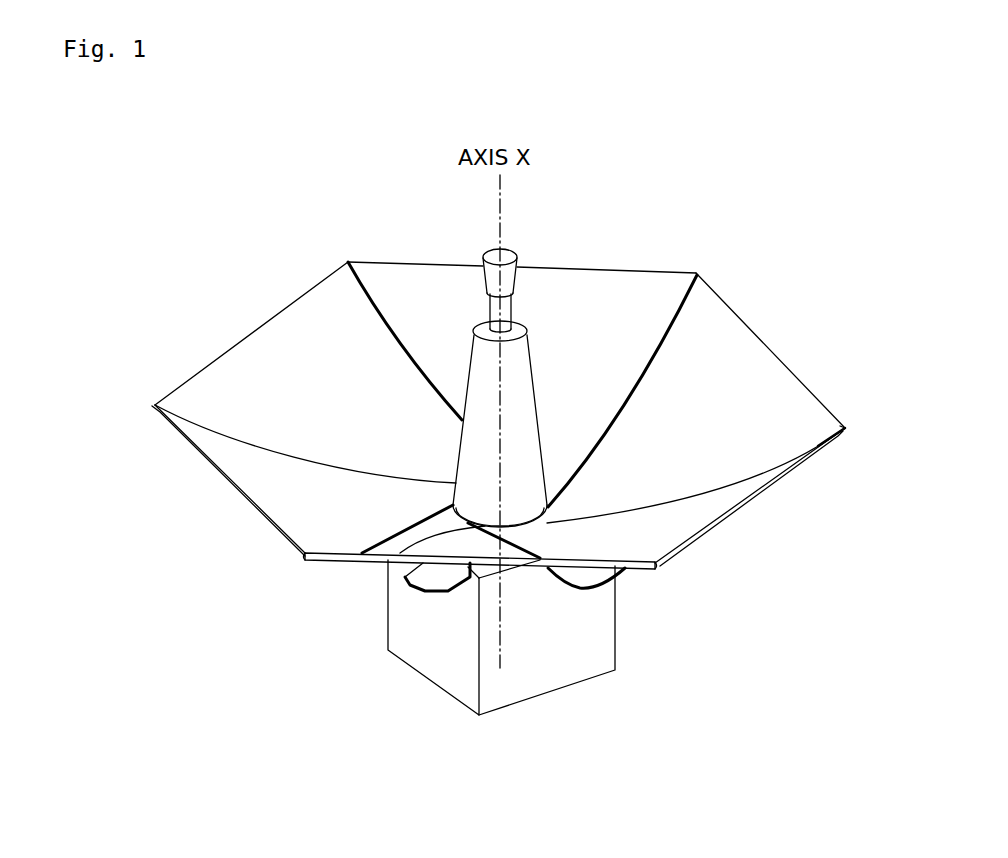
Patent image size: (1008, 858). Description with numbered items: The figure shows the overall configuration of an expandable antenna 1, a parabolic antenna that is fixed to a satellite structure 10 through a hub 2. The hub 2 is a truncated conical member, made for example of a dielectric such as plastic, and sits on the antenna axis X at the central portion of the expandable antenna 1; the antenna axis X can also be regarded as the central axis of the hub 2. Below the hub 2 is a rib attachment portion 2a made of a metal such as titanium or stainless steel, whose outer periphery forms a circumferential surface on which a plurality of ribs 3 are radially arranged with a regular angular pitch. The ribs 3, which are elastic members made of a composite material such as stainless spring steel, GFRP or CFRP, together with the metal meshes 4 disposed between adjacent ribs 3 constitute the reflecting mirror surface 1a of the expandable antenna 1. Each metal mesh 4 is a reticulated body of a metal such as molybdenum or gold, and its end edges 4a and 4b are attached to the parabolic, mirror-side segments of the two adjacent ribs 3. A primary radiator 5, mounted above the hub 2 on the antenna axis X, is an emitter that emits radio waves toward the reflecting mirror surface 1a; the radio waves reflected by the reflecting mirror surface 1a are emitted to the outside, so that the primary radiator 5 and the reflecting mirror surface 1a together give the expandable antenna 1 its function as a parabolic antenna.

The expandable antenna 1 is at (752, 132).
The reflecting mirror surface 1a is at (587, 292).
The hub 2 is at (478, 440).
The rib attachment portion 2a is at (427, 533).
The rib 3 is at (846, 434).
The metal mesh 4 is at (290, 303).
The end edge 4a is at (400, 342).
The end edge 4b is at (657, 353).
The primary radiator 5 is at (510, 253).
The satellite structure 10 is at (560, 668).